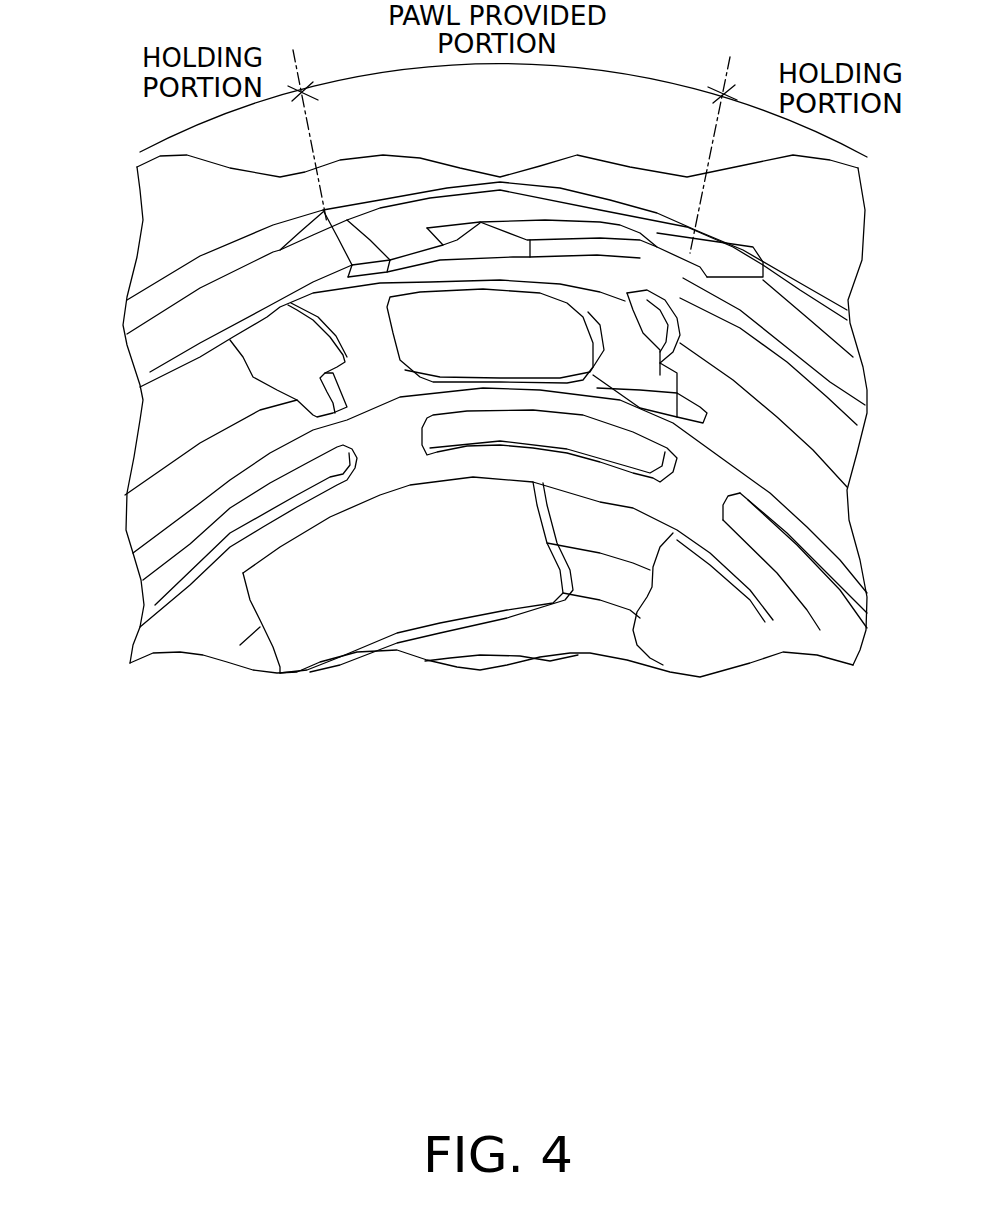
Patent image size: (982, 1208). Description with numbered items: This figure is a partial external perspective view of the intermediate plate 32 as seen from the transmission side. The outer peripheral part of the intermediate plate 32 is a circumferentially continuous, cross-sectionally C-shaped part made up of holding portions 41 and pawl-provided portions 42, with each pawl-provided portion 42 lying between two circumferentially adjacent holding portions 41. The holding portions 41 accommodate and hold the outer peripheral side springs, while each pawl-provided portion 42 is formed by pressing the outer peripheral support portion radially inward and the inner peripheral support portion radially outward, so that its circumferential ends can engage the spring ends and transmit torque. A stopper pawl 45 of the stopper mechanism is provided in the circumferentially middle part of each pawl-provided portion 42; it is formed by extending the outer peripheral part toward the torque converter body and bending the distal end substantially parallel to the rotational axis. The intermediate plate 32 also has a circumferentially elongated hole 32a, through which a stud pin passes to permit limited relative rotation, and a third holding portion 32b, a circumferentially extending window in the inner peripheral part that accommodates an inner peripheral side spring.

The intermediate plate 32 is at (445, 416).
The elongated hole 32a is at (549, 573).
The third holding portion 32b is at (508, 619).
The holding portion 41 is at (457, 258).
The pawl-provided portion 42 is at (481, 179).
The stopper pawl 45 is at (595, 186).